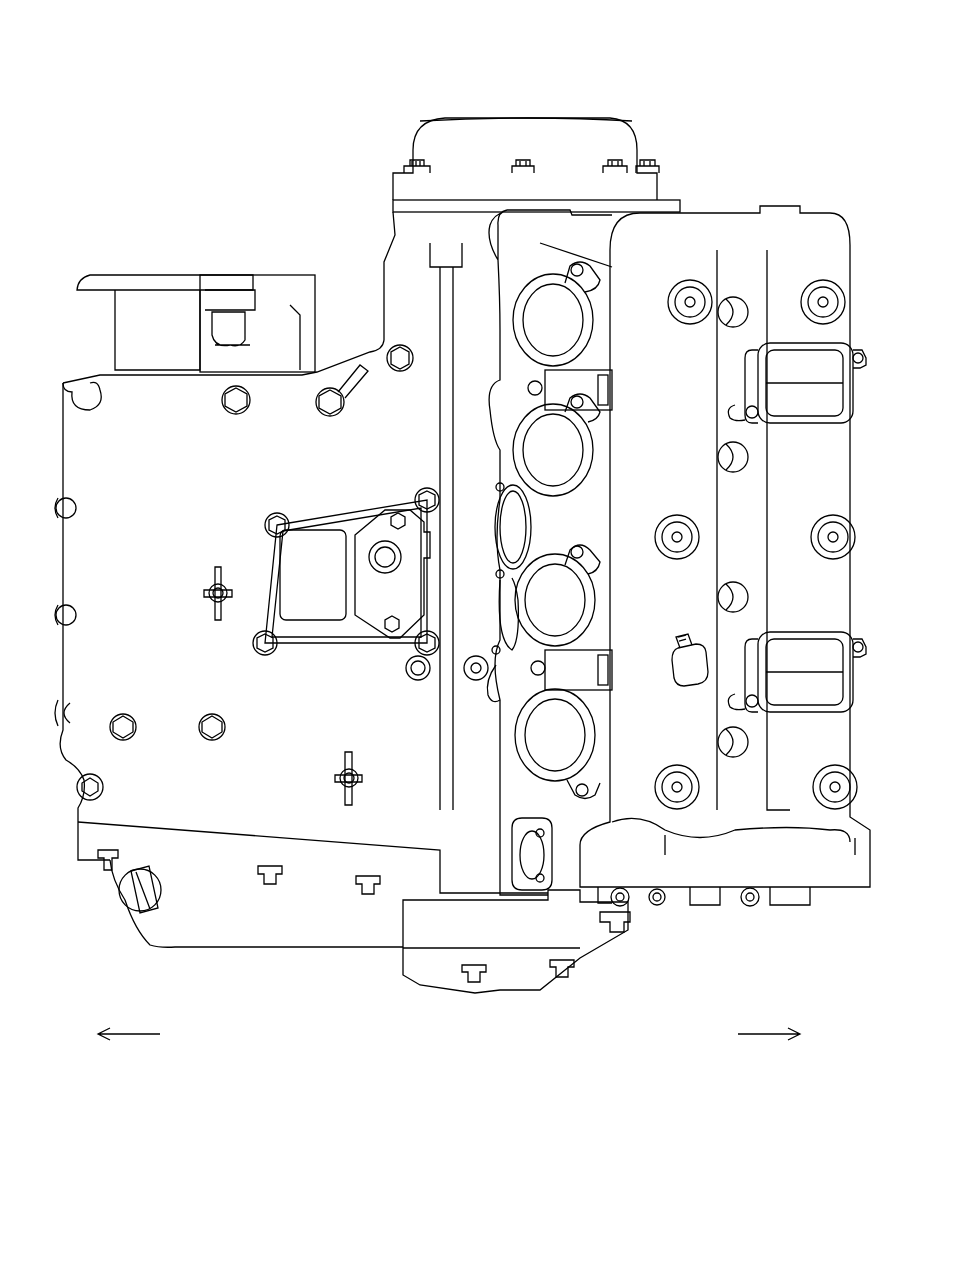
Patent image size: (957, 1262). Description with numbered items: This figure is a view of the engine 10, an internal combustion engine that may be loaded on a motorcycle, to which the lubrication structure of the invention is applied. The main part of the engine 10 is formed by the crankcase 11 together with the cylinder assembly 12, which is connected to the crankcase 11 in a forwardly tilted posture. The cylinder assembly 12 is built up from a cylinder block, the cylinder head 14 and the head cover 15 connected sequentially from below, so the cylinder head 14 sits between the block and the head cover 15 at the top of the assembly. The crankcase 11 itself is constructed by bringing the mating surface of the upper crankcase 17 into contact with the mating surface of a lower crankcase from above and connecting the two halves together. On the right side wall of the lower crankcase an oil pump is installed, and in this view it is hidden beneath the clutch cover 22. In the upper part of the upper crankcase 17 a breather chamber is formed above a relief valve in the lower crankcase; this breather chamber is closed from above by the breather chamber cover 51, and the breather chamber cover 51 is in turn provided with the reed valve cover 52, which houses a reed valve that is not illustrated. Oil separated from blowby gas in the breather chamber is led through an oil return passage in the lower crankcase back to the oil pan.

The engine 10 is at (455, 66).
The crankcase 11 is at (365, 347).
The cylinder assembly 12 is at (745, 212).
The cylinder head 14 is at (590, 225).
The head cover 15 is at (700, 238).
The upper crankcase 17 is at (211, 813).
The clutch cover 22 is at (250, 938).
The breather chamber cover 51 is at (325, 633).
The reed valve cover 52 is at (372, 605).